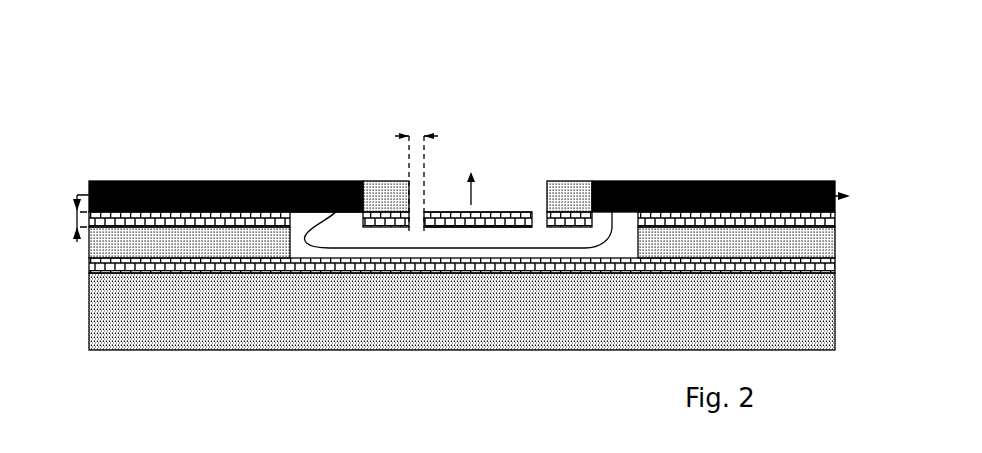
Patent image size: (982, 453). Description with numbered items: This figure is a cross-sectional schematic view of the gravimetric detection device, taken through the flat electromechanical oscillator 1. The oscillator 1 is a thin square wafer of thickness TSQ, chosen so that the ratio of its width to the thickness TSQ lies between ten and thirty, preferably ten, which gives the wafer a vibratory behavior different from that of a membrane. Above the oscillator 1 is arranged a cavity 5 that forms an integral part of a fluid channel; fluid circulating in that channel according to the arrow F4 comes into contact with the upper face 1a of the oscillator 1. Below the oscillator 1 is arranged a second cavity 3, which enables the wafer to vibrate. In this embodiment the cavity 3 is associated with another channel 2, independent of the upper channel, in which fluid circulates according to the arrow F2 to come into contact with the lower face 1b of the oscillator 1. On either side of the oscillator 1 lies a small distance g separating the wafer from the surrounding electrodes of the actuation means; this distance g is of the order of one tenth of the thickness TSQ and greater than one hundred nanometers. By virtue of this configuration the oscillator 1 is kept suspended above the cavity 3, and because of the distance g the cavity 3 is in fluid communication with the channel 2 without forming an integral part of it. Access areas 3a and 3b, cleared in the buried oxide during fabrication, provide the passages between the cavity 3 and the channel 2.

The flat electromechanical oscillator 1 is at (499, 200).
The face of the oscillator 1a is at (540, 170).
The face of the oscillator 1b is at (540, 170).
The channel 2 is at (215, 181).
The second cavity 3 is at (453, 262).
The access area 3a is at (350, 200).
The access area 3b is at (603, 200).
The cavity 5 is at (485, 182).
The distance g is at (417, 135).
The arrow F2 is at (297, 194).
The arrow F4 is at (466, 193).
The thickness TSQ is at (77, 218).